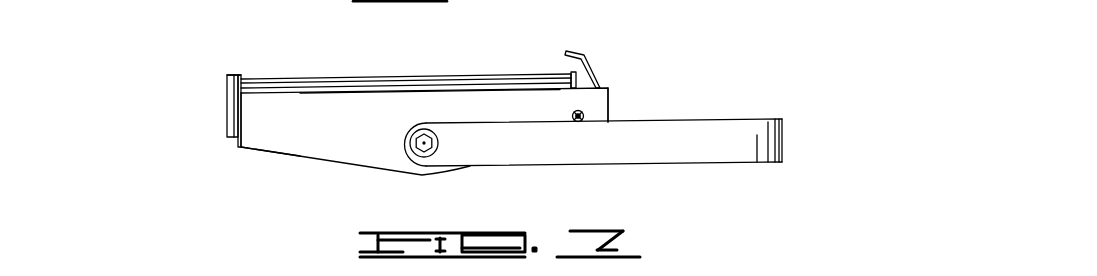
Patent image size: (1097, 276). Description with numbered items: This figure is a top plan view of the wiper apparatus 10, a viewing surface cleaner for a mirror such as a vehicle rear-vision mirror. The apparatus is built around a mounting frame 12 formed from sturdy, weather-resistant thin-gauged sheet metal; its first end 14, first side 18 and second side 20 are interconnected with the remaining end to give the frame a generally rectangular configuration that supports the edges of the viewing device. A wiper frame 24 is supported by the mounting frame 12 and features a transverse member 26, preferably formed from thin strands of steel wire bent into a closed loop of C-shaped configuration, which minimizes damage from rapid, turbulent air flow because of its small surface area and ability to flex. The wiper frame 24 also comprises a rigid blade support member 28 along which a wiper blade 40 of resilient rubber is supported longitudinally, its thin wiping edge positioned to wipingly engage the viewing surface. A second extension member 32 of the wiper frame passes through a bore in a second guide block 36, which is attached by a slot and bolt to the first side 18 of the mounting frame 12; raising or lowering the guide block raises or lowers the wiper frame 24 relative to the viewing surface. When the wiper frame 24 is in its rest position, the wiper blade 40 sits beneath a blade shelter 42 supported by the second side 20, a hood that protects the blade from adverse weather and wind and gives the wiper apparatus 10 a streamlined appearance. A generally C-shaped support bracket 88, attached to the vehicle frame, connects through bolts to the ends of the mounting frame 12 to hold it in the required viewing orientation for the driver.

The wiper apparatus 10 is at (232, 63).
The mounting frame 12 is at (298, 155).
The first end 14 is at (370, 125).
The first side 18 is at (239, 145).
The second side 20 is at (610, 98).
The wiper frame 24 is at (227, 93).
The transverse member 26 is at (228, 113).
The blade support member 28 is at (573, 72).
The second extension member 32 is at (441, 80).
The second guide block 36 is at (240, 75).
The wiper blade 40 is at (570, 86).
The blade shelter 42 is at (583, 55).
The support bracket 88 is at (688, 118).